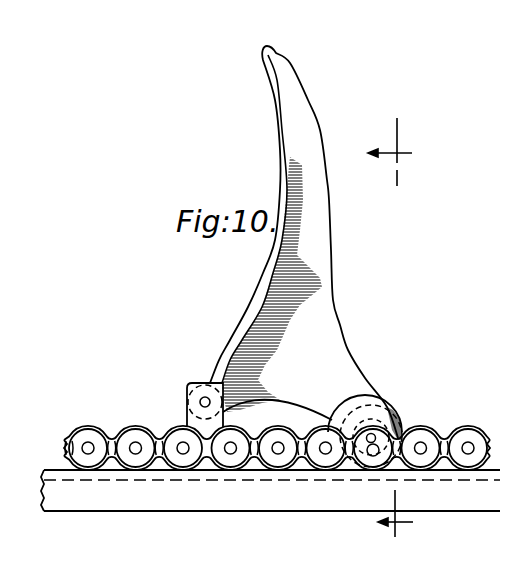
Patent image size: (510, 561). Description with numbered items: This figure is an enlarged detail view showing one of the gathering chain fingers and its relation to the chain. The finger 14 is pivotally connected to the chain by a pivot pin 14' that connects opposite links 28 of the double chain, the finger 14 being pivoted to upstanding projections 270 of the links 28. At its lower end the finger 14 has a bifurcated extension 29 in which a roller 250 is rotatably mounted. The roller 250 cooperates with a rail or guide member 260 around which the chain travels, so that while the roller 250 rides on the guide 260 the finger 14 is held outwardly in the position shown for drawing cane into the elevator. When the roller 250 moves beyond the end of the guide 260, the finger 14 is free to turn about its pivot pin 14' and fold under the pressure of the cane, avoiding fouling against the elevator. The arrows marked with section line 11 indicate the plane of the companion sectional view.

The section line 11- 11 is at (401, 327).
The cam stop finger 14 is at (299, 242).
The pivot pin 14' is at (186, 373).
The roller chain 28 is at (207, 452).
The hub roller 29 is at (379, 411).
The shaded wedge portion 250 is at (395, 418).
The guide rail 260 is at (270, 490).
The chain attachment block 270 is at (187, 418).